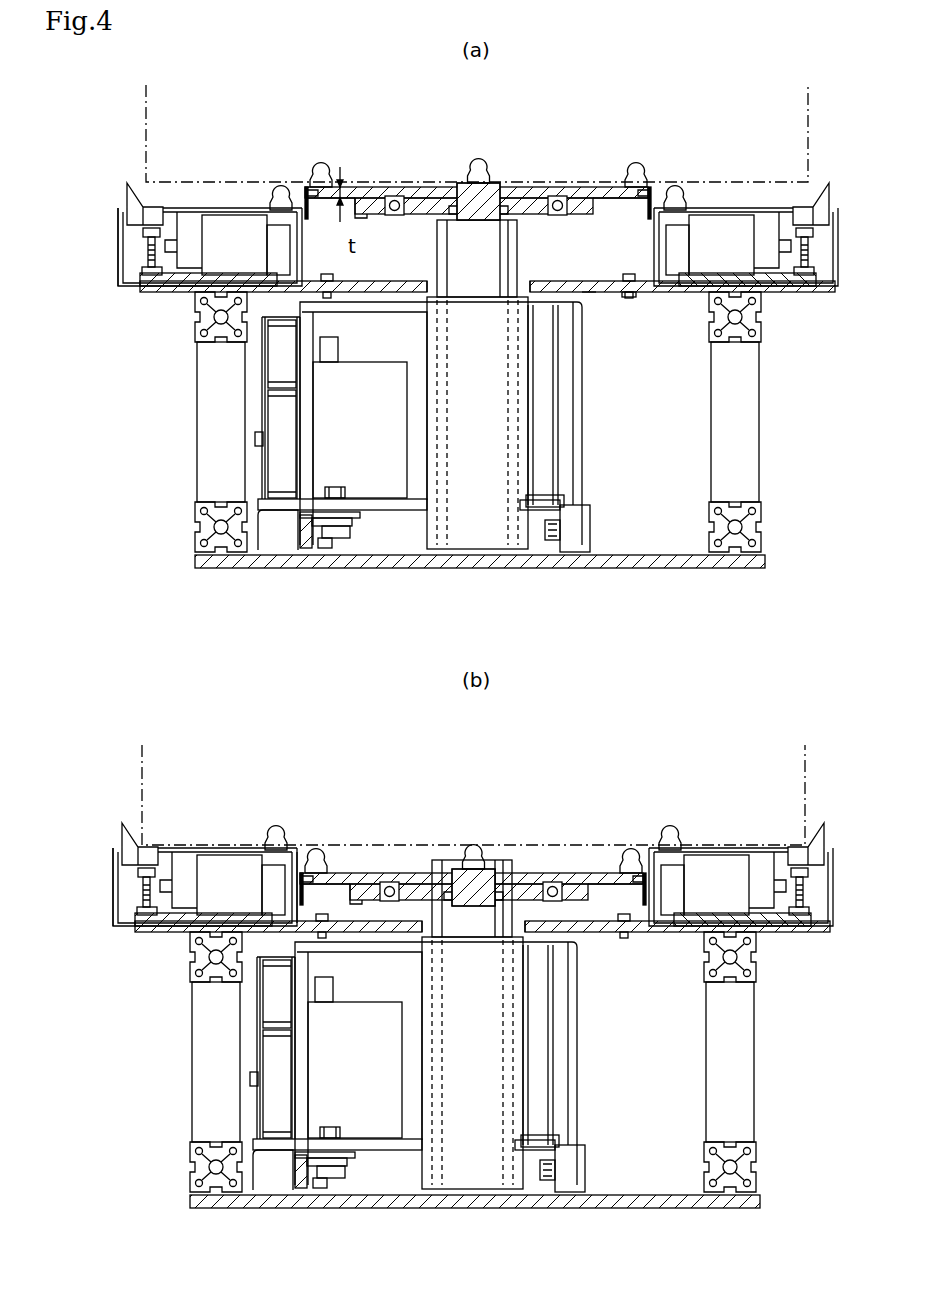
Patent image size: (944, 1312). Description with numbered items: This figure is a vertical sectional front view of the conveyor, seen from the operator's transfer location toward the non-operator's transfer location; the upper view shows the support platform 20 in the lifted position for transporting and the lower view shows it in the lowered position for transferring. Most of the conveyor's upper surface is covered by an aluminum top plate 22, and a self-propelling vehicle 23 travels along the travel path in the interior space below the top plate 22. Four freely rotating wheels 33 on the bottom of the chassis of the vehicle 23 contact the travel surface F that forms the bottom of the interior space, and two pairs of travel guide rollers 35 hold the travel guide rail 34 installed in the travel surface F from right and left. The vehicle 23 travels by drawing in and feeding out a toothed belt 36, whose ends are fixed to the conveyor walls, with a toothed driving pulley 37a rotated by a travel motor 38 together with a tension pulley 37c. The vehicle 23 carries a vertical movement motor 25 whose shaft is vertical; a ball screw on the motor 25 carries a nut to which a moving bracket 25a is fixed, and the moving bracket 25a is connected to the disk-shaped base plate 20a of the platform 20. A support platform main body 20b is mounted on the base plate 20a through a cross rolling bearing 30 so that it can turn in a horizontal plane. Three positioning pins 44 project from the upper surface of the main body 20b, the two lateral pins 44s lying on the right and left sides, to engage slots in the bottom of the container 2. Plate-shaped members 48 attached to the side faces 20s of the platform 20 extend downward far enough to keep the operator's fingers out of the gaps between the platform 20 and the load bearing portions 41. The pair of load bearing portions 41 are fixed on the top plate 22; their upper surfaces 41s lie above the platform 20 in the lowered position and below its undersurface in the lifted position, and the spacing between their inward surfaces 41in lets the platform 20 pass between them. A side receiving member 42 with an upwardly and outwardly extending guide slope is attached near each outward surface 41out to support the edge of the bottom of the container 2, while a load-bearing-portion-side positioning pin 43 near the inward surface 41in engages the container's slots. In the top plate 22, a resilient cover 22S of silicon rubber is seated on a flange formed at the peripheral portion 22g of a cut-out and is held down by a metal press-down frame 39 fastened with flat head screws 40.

The container 2 is at (146, 122).
The travel surface F is at (668, 552).
The support platform 20 is at (524, 177).
The base plate 20a is at (415, 216).
The support platform main body 20b is at (412, 187).
The side faces 20s is at (290, 207).
The top plate 22 is at (702, 300).
The resilient cover 22S is at (538, 279).
The peripheral portion 22g is at (630, 296).
The self-propelling vehicle 23 is at (585, 383).
The vertical movement motor 25 is at (490, 550).
The moving bracket 25a is at (478, 292).
The cross rolling bearing 30 is at (563, 193).
The freely rotating wheels 33 is at (585, 552).
The travel guide rail 34 is at (305, 557).
The travel guide rollers 35 is at (360, 528).
The toothed belt 36 is at (266, 395).
The toothed driving pulley 37a is at (270, 455).
The tension pulley 37c is at (280, 352).
The travel motor 38 is at (360, 365).
The metal press-down frame 39 is at (632, 283).
The flat head screws 40 is at (636, 300).
The load bearing portions 41 is at (775, 205).
The upper surfaces 41s is at (218, 205).
The inward surfaces 41in is at (298, 852).
The outward surface 41out is at (140, 266).
The side receiving member 42 is at (135, 208).
The load-bearing-portion-side positioning pin 43 is at (276, 190).
The support-platform-side positioning pins 44 is at (478, 166).
The lateral pins 44s is at (323, 165).
The plate-shaped members 48 is at (310, 222).